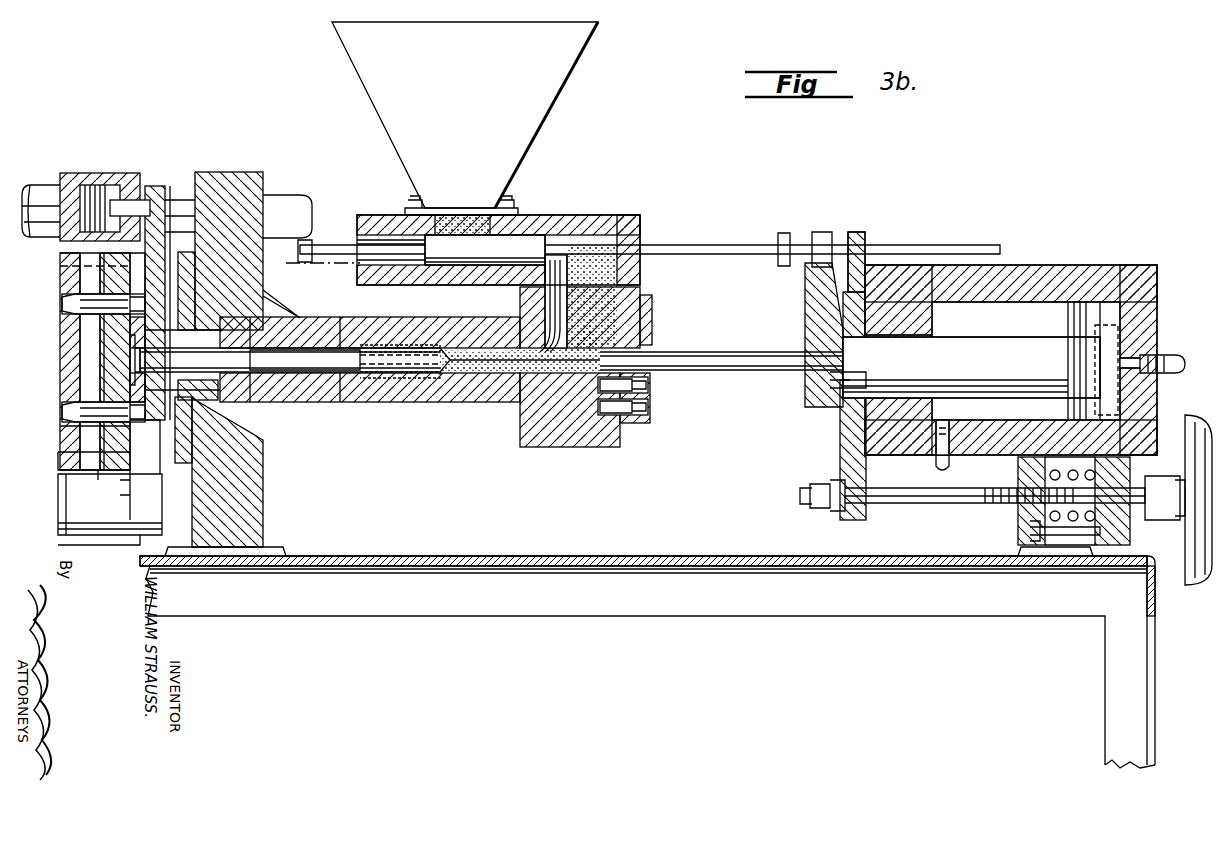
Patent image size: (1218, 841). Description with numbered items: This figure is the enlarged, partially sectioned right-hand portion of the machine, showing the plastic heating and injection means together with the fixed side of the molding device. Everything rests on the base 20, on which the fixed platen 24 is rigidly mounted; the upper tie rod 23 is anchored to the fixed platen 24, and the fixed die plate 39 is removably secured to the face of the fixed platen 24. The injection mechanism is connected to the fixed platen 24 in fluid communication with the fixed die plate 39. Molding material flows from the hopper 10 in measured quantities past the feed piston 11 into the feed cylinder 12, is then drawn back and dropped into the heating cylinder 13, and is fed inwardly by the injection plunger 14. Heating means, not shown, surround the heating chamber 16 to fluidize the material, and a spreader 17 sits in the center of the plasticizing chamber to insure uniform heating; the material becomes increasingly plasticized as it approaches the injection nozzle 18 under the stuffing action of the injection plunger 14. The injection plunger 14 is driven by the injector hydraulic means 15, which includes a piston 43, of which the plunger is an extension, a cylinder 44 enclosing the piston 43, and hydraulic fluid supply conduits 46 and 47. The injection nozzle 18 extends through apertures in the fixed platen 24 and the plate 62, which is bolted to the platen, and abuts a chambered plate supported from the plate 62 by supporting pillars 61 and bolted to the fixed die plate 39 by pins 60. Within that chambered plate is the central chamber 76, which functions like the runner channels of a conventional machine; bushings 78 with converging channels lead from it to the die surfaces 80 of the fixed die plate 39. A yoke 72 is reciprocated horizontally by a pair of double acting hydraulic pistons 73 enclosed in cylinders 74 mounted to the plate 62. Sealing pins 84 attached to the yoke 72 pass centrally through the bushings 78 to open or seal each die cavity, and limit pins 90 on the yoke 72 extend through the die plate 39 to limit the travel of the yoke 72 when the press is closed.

The hopper 10 is at (548, 92).
The feed piston 11 is at (540, 218).
The feed cylinder 12 is at (600, 218).
The heating cylinder 13 is at (640, 292).
The injection plunger 14 is at (718, 356).
The injector hydraulic means 15 is at (1030, 250).
The heating chamber 16 is at (406, 378).
The spreader 17 is at (378, 380).
The injection nozzle 18 is at (258, 402).
The base 20 is at (1163, 672).
The upper tie rod 23 is at (184, 185).
The fixed platen 24 is at (250, 165).
The fixed die plate 39 is at (58, 348).
The piston 43 is at (1106, 300).
The cylinder 44 is at (985, 456).
The hydraulic fluid supply conduit 46 is at (932, 468).
The hydraulic fluid supply conduit 47 is at (1168, 350).
The pins 60 is at (62, 294).
The supporting pillars 61 is at (196, 430).
The plate 62 is at (232, 458).
The yoke 72 is at (195, 258).
The double acting hydraulic pistons 73 is at (100, 180).
The cylinders 74 is at (56, 508).
The central chamber 76 is at (108, 460).
The bushings 78 is at (58, 432).
The die surfaces 80 is at (56, 408).
The sealing pins 84 is at (158, 462).
The limit pins 90 is at (58, 462).